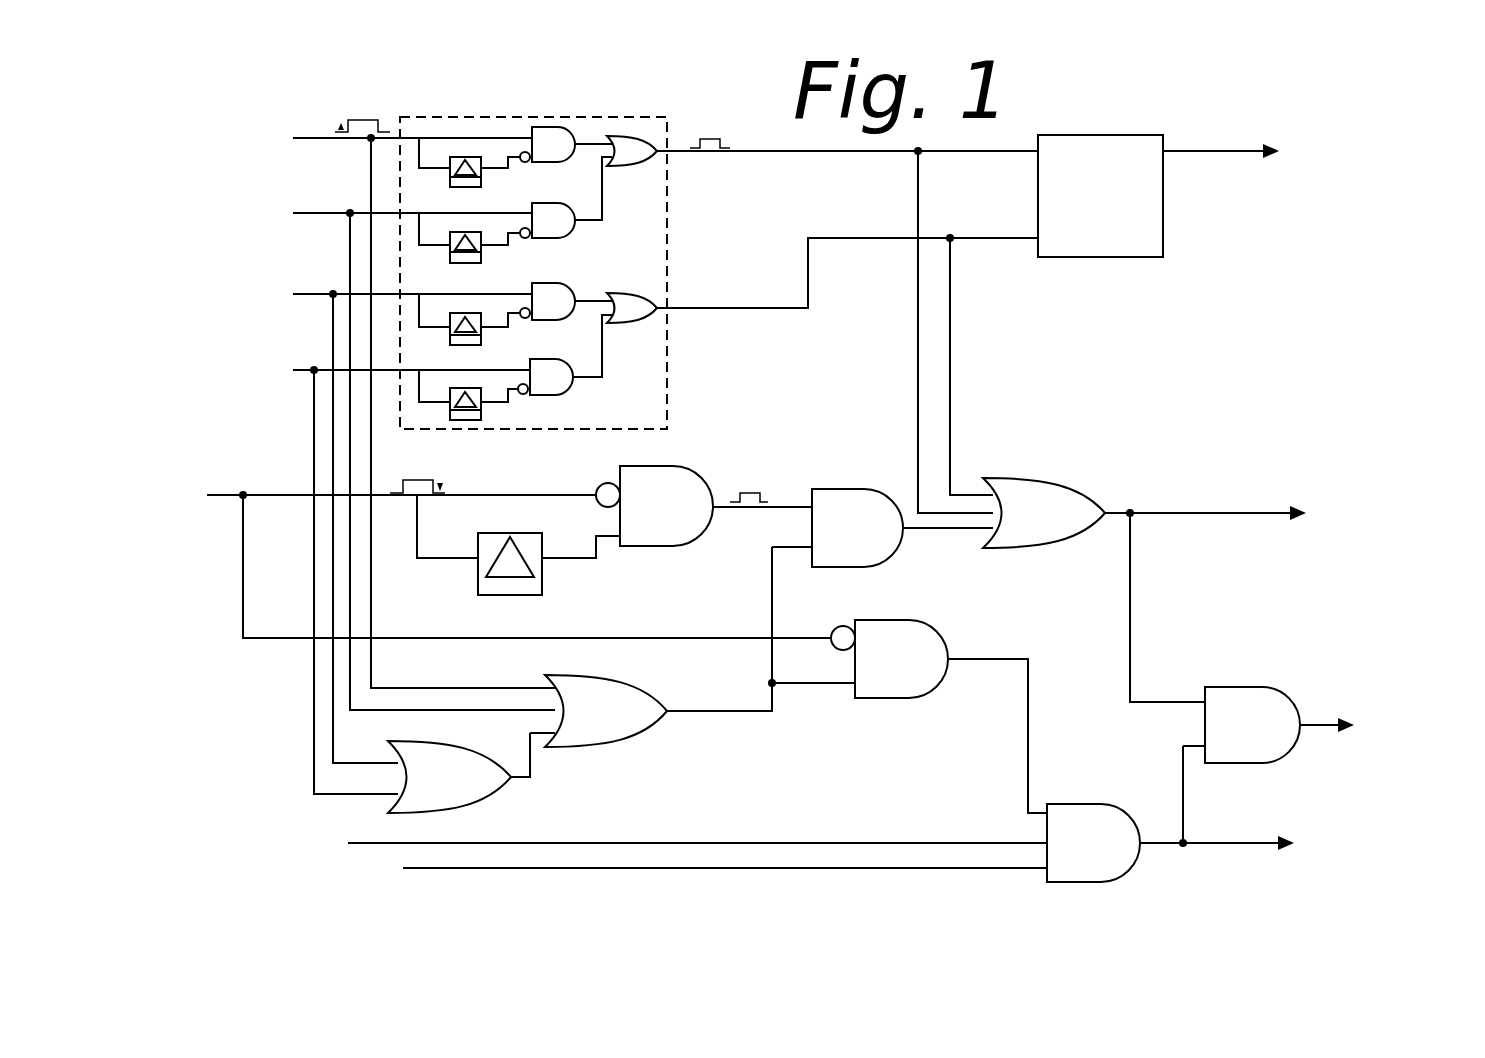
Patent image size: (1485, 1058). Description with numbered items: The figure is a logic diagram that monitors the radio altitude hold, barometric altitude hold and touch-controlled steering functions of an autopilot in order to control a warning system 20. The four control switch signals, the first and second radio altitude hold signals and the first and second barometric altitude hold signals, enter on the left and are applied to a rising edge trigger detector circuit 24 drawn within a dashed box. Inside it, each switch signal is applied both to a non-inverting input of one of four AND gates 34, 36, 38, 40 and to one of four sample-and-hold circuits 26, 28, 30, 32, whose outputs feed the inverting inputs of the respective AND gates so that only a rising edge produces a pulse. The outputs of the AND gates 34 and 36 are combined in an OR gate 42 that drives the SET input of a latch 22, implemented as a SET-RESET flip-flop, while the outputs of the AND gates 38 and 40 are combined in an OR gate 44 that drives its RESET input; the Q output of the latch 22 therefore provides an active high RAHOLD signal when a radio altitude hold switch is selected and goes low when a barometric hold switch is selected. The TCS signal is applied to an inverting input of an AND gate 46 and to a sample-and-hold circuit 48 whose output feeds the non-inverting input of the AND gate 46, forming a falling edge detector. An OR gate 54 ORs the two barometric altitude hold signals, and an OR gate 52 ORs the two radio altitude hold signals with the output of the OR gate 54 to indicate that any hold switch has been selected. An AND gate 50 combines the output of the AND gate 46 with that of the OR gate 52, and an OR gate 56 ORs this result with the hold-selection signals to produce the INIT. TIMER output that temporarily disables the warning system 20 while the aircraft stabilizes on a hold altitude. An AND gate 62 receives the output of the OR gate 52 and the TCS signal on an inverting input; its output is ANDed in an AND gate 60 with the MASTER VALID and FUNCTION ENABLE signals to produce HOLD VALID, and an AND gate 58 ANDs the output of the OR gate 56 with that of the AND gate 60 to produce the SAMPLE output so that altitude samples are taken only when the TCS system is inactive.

The warning system 20 is at (1212, 118).
The latch 22 is at (1090, 258).
The rising edge trigger detector circuit 24 is at (455, 117).
The sample-and-hold circuit 26 is at (481, 178).
The sample-and-hold circuit 28 is at (481, 258).
The sample-and-hold circuit 30 is at (481, 338).
The sample-and-hold circuit 32 is at (481, 413).
The AND gate 34 is at (570, 127).
The AND gate 36 is at (578, 228).
The AND gate 38 is at (580, 287).
The AND gate 40 is at (578, 392).
The OR gate 42 is at (650, 147).
The OR gate 44 is at (660, 306).
The AND gate 46 is at (700, 473).
The sample-and-hold circuit 48 is at (525, 540).
The AND gate 50 is at (840, 489).
The OR gate 52 is at (660, 690).
The OR gate 54 is at (515, 805).
The OR gate 56 is at (1085, 478).
The AND gate 58 is at (1275, 688).
The AND gate 60 is at (1100, 805).
The AND gate 62 is at (975, 632).